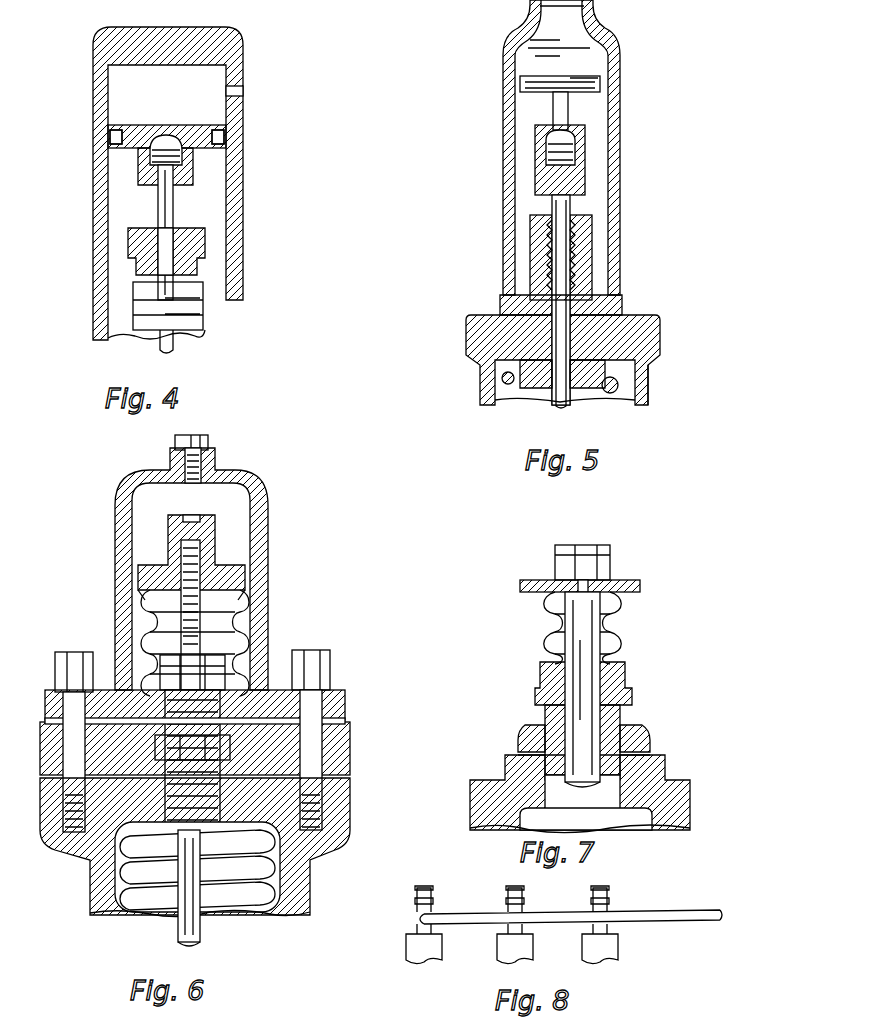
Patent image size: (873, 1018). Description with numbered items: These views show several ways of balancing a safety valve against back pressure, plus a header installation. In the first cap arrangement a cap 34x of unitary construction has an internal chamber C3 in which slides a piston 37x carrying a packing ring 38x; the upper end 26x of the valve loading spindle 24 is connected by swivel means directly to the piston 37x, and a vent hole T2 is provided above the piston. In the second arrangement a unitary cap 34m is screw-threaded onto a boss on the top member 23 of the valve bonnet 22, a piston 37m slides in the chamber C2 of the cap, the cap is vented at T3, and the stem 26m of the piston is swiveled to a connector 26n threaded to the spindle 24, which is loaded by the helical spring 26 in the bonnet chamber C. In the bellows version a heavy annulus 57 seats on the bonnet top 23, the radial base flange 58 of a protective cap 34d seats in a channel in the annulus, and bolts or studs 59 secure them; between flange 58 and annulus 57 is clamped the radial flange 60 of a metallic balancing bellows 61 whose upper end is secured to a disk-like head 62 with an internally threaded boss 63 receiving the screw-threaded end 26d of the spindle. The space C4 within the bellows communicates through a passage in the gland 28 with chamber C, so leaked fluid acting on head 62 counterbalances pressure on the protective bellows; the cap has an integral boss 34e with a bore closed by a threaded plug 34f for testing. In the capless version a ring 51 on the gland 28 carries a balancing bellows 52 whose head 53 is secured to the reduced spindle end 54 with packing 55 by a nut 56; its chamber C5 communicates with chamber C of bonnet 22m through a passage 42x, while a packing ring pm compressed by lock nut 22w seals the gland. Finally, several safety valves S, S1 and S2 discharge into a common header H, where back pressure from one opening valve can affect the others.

In FIG. 4, the vent hole T2 is at (253, 93).
In FIG. 5, the vent T3 is at (504, 55).
In FIG. 4, the piston 37x is at (130, 125).
In FIG. 4, the packing ring 38x is at (108, 140).
In FIG. 4, the upper end of the valve loading spindle 26x is at (165, 210).
In FIG. 4, the cap 34x is at (243, 178).
In FIG. 4, the internal chamber C3 is at (220, 262).
In FIG. 4, the valve loading spindle 24 is at (175, 345).
In FIG. 5, the valve loading spindle 24 is at (555, 404).
In FIG. 6, the valve loading spindle 24 is at (178, 930).
In FIG. 7, the valve loading spindle 24 is at (578, 740).
In FIG. 5, the piston 37m is at (565, 76).
In FIG. 5, the stem of the piston 26m is at (568, 112).
In FIG. 5, the connector 26n is at (585, 138).
In FIG. 5, the unitary cap 34m is at (612, 168).
In FIG. 5, the chamber C2 is at (600, 238).
In FIG. 5, the top closure portion 23 is at (640, 318).
In FIG. 6, the top closure portion 23 is at (335, 795).
In FIG. 5, the bonnet device 22 is at (640, 398).
In FIG. 6, the bonnet device 22 is at (290, 892).
In FIG. 5, the helical loading spring 26 is at (610, 395).
In FIG. 6, the helical loading spring 26 is at (272, 895).
In FIG. 6, the threaded plug 34f is at (208, 448).
In FIG. 6, the integral boss 34e is at (172, 470).
In FIG. 6, the protective cap 34d is at (265, 525).
In FIG. 6, the internally threaded boss 63 is at (170, 540).
In FIG. 6, the upper screw-threaded end 26d is at (181, 563).
In FIG. 6, the disk-like head 62 is at (245, 572).
In FIG. 6, the space within the balancing bellows C4 is at (148, 600).
In FIG. 6, the metallic balancing bellows 61 is at (145, 620).
In FIG. 6, the gland 28 is at (160, 665).
In FIG. 7, the gland 28 is at (622, 722).
In FIG. 6, the bolts or studs 59 is at (60, 700).
In FIG. 6, the radial flange 60 is at (110, 740).
In FIG. 6, the radial base flange 58 is at (335, 698).
In FIG. 6, the heavy annulus 57 is at (340, 750).
In FIG. 6, the chamber C is at (285, 852).
In FIG. 7, the chamber C is at (628, 822).
In FIG. 7, the nut 56 is at (557, 565).
In FIG. 7, the packing 55 is at (590, 584).
In FIG. 7, the movable bellows head 53 is at (600, 582).
In FIG. 7, the reduced upper end of the loading spindle 54 is at (555, 608).
In FIG. 7, the balancing bellows 52 is at (625, 620).
In FIG. 7, the interior chamber of the balancing bellows C5 is at (622, 648).
In FIG. 7, the ring 51 is at (630, 680).
In FIG. 7, the passage 42x is at (568, 704).
In FIG. 7, the compression lock nut 22w is at (640, 740).
In FIG. 7, the packing ring pm is at (630, 758).
In FIG. 7, the valve bonnet 22m is at (495, 812).
In FIG. 8, the header H is at (685, 912).
In FIG. 8, the safety valve S is at (406, 956).
In FIG. 8, the safety valve S1 is at (497, 952).
In FIG. 8, the safety valve S2 is at (582, 952).